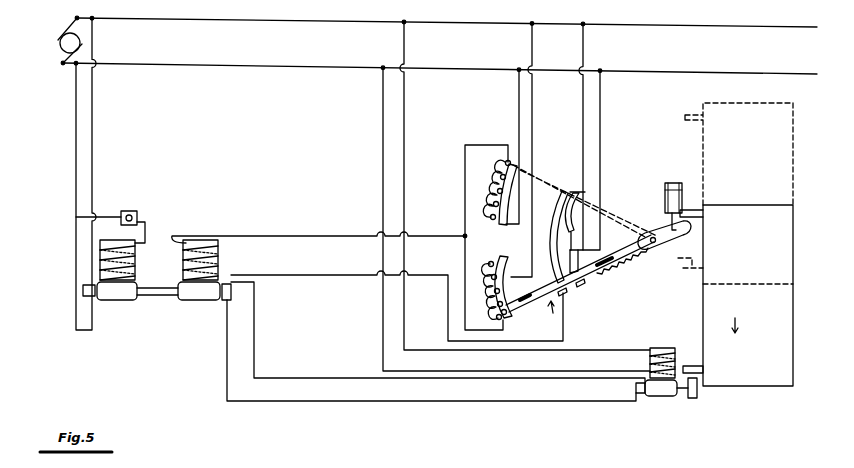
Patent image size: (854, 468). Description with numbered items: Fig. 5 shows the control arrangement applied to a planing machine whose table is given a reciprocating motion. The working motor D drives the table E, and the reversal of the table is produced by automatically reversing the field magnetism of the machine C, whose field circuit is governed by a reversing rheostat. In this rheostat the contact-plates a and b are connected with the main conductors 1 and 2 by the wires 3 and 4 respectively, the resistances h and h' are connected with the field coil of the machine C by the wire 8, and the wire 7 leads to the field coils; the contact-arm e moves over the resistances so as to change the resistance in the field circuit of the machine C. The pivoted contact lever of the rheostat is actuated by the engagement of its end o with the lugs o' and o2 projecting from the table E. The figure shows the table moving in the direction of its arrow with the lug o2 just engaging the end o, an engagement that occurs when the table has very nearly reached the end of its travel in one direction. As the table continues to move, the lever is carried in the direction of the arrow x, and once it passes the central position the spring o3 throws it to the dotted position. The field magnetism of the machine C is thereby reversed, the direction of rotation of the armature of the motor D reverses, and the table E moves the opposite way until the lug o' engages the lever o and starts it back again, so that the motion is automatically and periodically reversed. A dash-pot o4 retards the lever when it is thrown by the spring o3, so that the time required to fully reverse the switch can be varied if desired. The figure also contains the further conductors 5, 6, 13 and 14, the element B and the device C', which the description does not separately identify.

The main conductor 1 is at (440, 62).
The main conductor 2 is at (447, 16).
The wire 3 is at (509, 147).
The wire 4 is at (526, 151).
The branch wire 5 is at (596, 160).
The branch wire 6 is at (573, 137).
The wire 7 is at (397, 300).
The wire 8 is at (319, 231).
The wire 13 is at (438, 332).
The wire 14 is at (431, 358).
The battery B is at (57, 37).
The machine C is at (204, 283).
The relay magnet C' is at (110, 283).
The working motor D is at (666, 382).
The table E is at (735, 244).
The contact-plate a is at (511, 287).
The contact-plate b is at (510, 194).
The contact-arm e is at (511, 321).
The resistance h is at (485, 295).
The resistance h' is at (490, 186).
The end of rheostat lever o is at (598, 266).
The lug o' is at (693, 360).
The lug o2 is at (691, 204).
The spring o3 is at (622, 263).
The dash-pot o4 is at (663, 206).
The arrow x is at (555, 302).